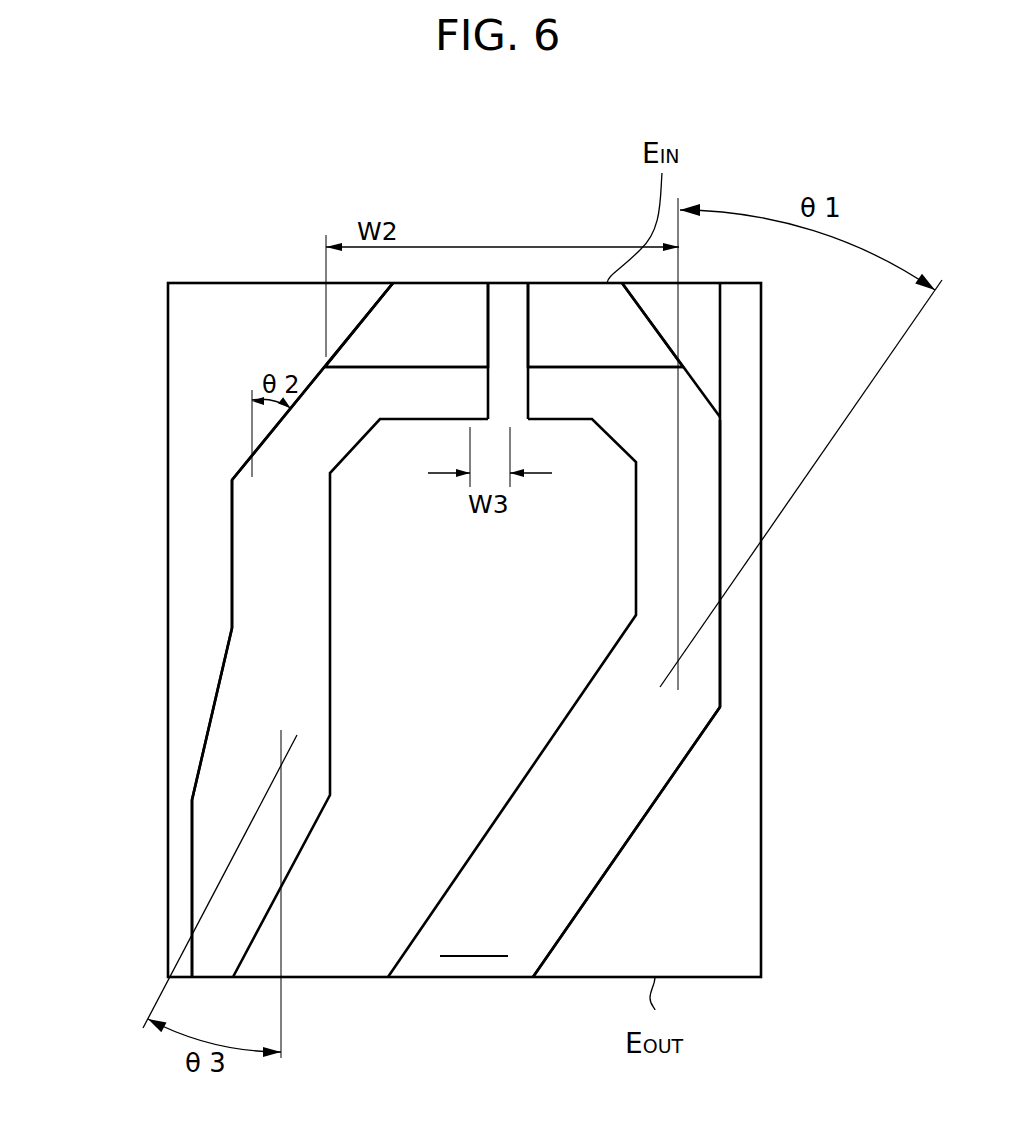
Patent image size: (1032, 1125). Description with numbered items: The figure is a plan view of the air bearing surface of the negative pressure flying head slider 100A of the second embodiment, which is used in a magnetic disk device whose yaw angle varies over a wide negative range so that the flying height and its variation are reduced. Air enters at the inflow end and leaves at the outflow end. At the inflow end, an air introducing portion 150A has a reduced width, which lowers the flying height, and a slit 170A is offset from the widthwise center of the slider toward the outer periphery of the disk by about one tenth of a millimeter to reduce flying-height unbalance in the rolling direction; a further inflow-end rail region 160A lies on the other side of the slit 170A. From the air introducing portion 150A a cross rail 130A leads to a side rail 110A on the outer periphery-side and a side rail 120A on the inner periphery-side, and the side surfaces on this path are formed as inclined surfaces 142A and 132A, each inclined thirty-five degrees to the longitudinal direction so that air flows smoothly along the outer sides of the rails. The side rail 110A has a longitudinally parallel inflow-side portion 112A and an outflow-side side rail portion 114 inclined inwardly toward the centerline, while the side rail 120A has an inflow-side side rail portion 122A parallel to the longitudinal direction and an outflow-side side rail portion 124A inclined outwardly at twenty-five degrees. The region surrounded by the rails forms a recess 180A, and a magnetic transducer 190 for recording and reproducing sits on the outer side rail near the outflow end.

The negative pressure flying head slider 100A is at (778, 762).
The side rail 110A is at (707, 680).
The side portion of first electrode 112A is at (705, 532).
The outflow-side side rail portion 114 is at (585, 850).
The side rail 120A is at (270, 627).
The inflow-side side rail portion 122A is at (280, 583).
The outflow-side side rail portion 124A is at (237, 785).
The cross rail 130A is at (403, 393).
The inclined surface 132A is at (313, 378).
The inclined surface 142A is at (657, 325).
The air introducing portion 150A is at (428, 312).
The input electrode portion 160A is at (572, 318).
The slit 170A is at (505, 402).
The gap region 180A is at (503, 638).
The magnetic transducer 190 is at (477, 956).